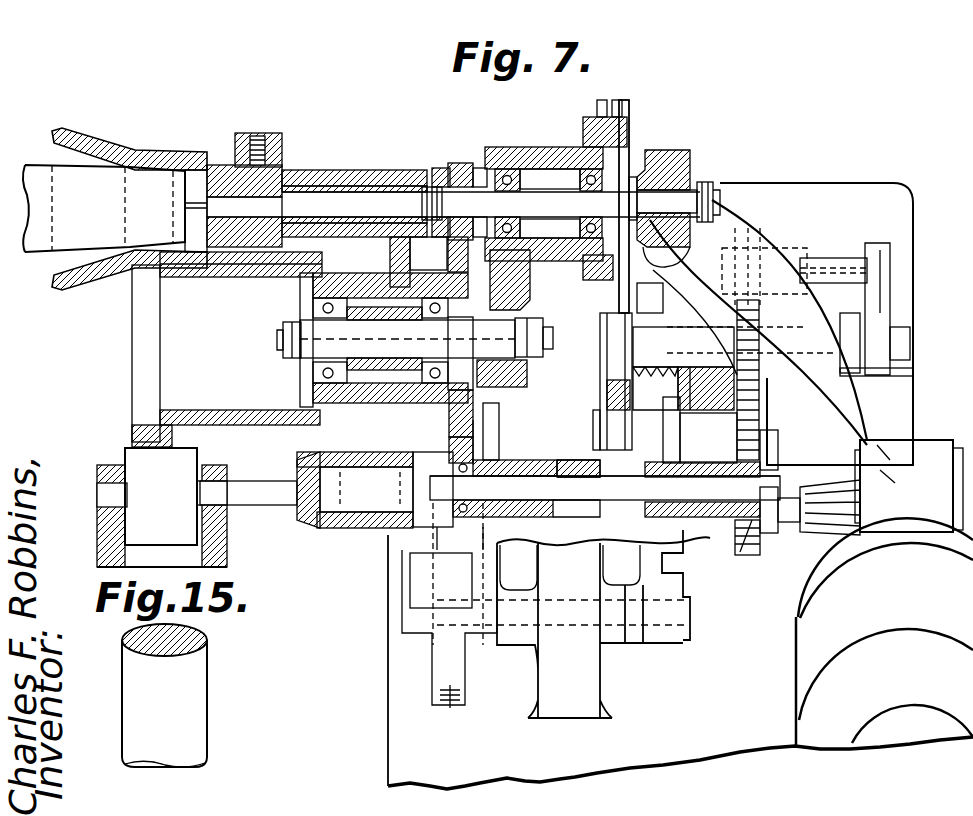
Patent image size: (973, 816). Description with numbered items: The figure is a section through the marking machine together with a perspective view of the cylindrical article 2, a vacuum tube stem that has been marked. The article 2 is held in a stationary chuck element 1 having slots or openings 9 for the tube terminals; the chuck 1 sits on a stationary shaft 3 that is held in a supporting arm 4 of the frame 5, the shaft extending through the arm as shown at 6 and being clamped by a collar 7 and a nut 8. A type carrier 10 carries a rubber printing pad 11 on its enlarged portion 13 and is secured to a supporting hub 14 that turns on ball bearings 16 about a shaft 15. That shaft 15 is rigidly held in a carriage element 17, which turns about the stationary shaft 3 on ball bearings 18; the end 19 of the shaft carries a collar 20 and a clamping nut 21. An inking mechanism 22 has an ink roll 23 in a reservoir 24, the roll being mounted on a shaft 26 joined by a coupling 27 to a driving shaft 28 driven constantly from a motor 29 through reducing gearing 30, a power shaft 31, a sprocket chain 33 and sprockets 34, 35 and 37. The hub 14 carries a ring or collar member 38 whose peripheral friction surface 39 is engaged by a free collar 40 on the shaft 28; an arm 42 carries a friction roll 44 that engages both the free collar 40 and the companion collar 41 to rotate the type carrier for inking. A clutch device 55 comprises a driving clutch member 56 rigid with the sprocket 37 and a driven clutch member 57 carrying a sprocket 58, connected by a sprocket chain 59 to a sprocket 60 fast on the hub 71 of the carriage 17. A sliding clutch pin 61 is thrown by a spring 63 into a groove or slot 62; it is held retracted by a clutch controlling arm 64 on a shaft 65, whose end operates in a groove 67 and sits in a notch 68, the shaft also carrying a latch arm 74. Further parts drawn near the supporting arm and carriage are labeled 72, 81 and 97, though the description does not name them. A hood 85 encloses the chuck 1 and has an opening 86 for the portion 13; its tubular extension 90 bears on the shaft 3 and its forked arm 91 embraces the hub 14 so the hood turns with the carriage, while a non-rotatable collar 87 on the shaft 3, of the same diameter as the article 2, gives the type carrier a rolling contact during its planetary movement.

In FIG. 7, the stationary chuck element 1 is at (198, 176).
In FIG. 7, the cylindrical article 2 is at (87, 180).
In FIG. 15, the cylindrical article 2 is at (135, 673).
In FIG. 7, the stationary shaft 3 is at (468, 197).
In FIG. 7, the supporting arm 4 is at (725, 218).
In FIG. 7, the frame 5 is at (840, 193).
In FIG. 7, the shaft extension through arm 6 is at (667, 165).
In FIG. 7, the collar 7 is at (629, 183).
In FIG. 7, the nut 8 is at (714, 190).
In FIG. 7, the slots or openings 9 is at (172, 166).
In FIG. 7, the type carrier 10 is at (228, 423).
In FIG. 7, the rubber printing pad 11 is at (163, 424).
In FIG. 7, the enlarged portion of type carrier 13 is at (133, 435).
In FIG. 7, the supporting hub 14 is at (380, 403).
In FIG. 7, the shaft 15 is at (513, 310).
In FIG. 7, the ball bearings 16 is at (358, 305).
In FIG. 7, the carriage element 17 is at (455, 330).
In FIG. 7, the ball bearings 18 is at (502, 167).
In FIG. 7, the end of shaft 19 is at (530, 328).
In FIG. 7, the collar 20 is at (527, 357).
In FIG. 7, the clamping nut 21 is at (528, 347).
In FIG. 7, the inking mechanism 22 is at (245, 575).
In FIG. 7, the ink roll 23 is at (140, 515).
In FIG. 7, the reservoir 24 is at (227, 553).
In FIG. 7, the shaft 26 is at (263, 496).
In FIG. 7, the coupling 27 is at (320, 528).
In FIG. 7, the driving shaft 28 is at (563, 478).
In FIG. 7, the motor 29 is at (810, 645).
In FIG. 7, the reducing gearing 30 is at (900, 447).
In FIG. 7, the power shaft 31 is at (790, 500).
In FIG. 7, the sprocket chain 33 is at (762, 430).
In FIG. 7, the sprocket 34 is at (747, 550).
In FIG. 7, the sprocket 35 is at (750, 233).
In FIG. 7, the sprocket 37 is at (760, 371).
In FIG. 7, the ring or collar member 38 is at (449, 426).
In FIG. 7, the peripheral friction surface 39 is at (473, 433).
In FIG. 7, the free collar 40 is at (447, 530).
In FIG. 7, the companion collar 41 is at (430, 483).
In FIG. 7, the arm 42 is at (440, 663).
In FIG. 7, the friction roll 44 is at (437, 583).
In FIG. 7, the clutch device 55 is at (685, 425).
In FIG. 7, the driving clutch member 56 is at (740, 363).
In FIG. 7, the driven clutch member 57 is at (668, 412).
In FIG. 7, the sprocket 58 is at (605, 420).
In FIG. 7, the sprocket chain 59 is at (602, 330).
In FIG. 7, the sprocket 60 is at (623, 117).
In FIG. 7, the sliding clutch pin 61 is at (698, 367).
In FIG. 7, the groove or slot 62 is at (760, 394).
In FIG. 7, the spring 63 is at (557, 358).
In FIG. 7, the clutch controlling arm 64 is at (605, 488).
In FIG. 7, the shaft 65 is at (615, 620).
In FIG. 7, the groove 67 is at (665, 295).
In FIG. 7, the notch 68 is at (667, 368).
In FIG. 7, the hub of carriage 71 is at (534, 160).
In FIG. 7, the cam arm 72 is at (685, 300).
In FIG. 7, the latch arm 74 is at (499, 440).
In FIG. 7, the support block 81 is at (513, 291).
In FIG. 7, the hood 85 is at (118, 152).
In FIG. 7, the opening 86 is at (127, 257).
In FIG. 7, the collar 87 is at (462, 167).
In FIG. 7, the tubular extension 90 is at (330, 170).
In FIG. 7, the forked arm 91 is at (390, 257).
In FIG. 7, the bracket 97 is at (835, 318).